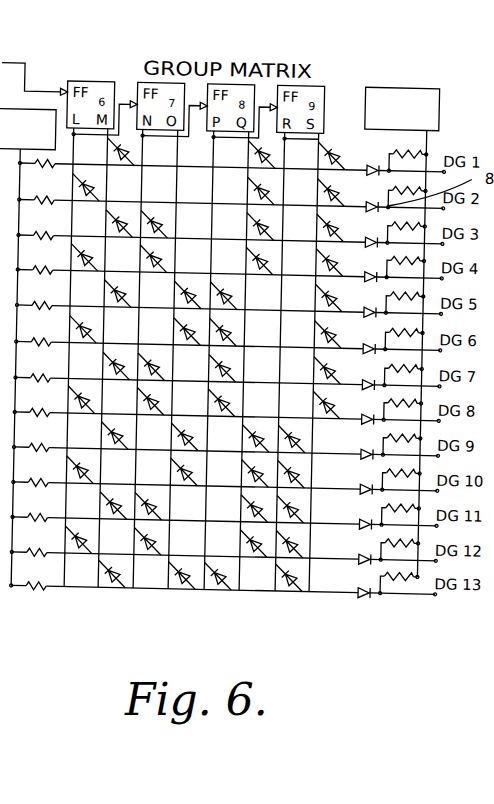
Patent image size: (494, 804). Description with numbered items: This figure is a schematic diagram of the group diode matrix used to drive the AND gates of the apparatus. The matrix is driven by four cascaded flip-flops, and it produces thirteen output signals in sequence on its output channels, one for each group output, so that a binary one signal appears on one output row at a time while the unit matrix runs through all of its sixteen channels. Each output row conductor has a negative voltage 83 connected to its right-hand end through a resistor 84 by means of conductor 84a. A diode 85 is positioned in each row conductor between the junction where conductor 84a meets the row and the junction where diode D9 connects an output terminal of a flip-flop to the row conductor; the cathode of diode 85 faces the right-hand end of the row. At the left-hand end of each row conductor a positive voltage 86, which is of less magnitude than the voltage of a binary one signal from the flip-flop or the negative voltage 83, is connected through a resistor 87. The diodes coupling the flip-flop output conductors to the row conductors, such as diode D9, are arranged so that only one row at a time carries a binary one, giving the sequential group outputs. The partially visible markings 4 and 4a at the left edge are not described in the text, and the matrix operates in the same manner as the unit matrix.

The positive voltage 86 is at (20, 118).
The negative voltage 83 is at (401, 87).
The resistor 84 is at (392, 182).
The conductor 84a is at (417, 573).
The diode 85 is at (376, 166).
The resistor 87 is at (48, 200).
The diode D9 is at (127, 589).
The line 4 is at (221, 241).
The line 4a is at (221, 277).